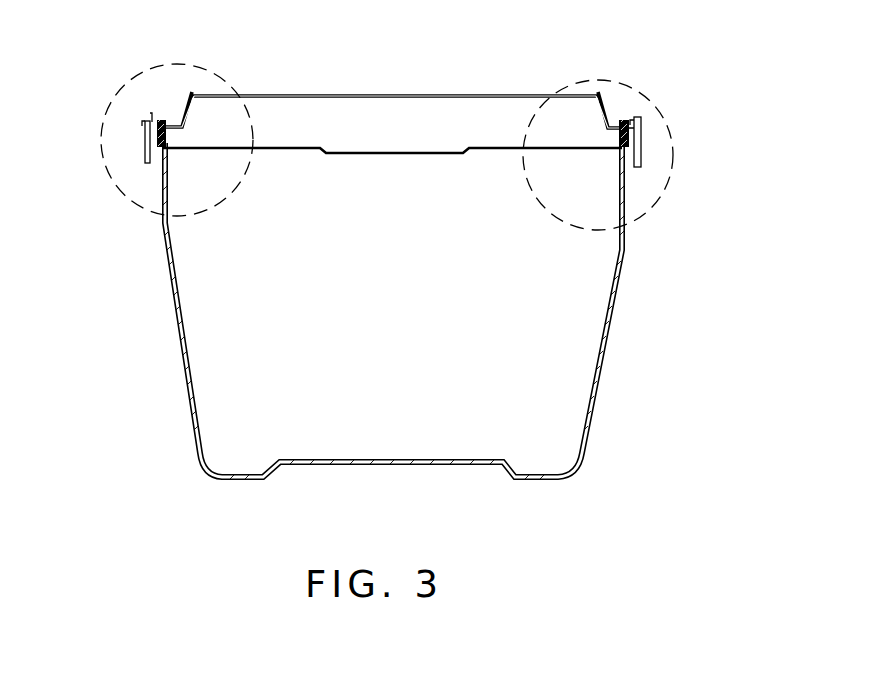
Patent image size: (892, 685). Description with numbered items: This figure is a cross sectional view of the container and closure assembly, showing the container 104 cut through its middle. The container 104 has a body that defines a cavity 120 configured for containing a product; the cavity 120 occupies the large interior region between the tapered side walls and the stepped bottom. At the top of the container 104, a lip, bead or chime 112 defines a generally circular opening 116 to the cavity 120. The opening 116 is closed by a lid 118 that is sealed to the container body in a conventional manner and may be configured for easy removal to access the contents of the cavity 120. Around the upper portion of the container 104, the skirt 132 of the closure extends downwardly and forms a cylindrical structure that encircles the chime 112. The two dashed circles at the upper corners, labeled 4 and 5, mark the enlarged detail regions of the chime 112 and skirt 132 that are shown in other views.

The container 104 is at (625, 260).
The opening 116 is at (403, 165).
The lid 118 is at (297, 150).
The cavity 120 is at (430, 323).
The chime 112 is at (618, 120).
The skirt 132 is at (645, 147).
The detail region of FIG. 5 is at (99, 113).
The detail region of FIG. 4 is at (671, 123).